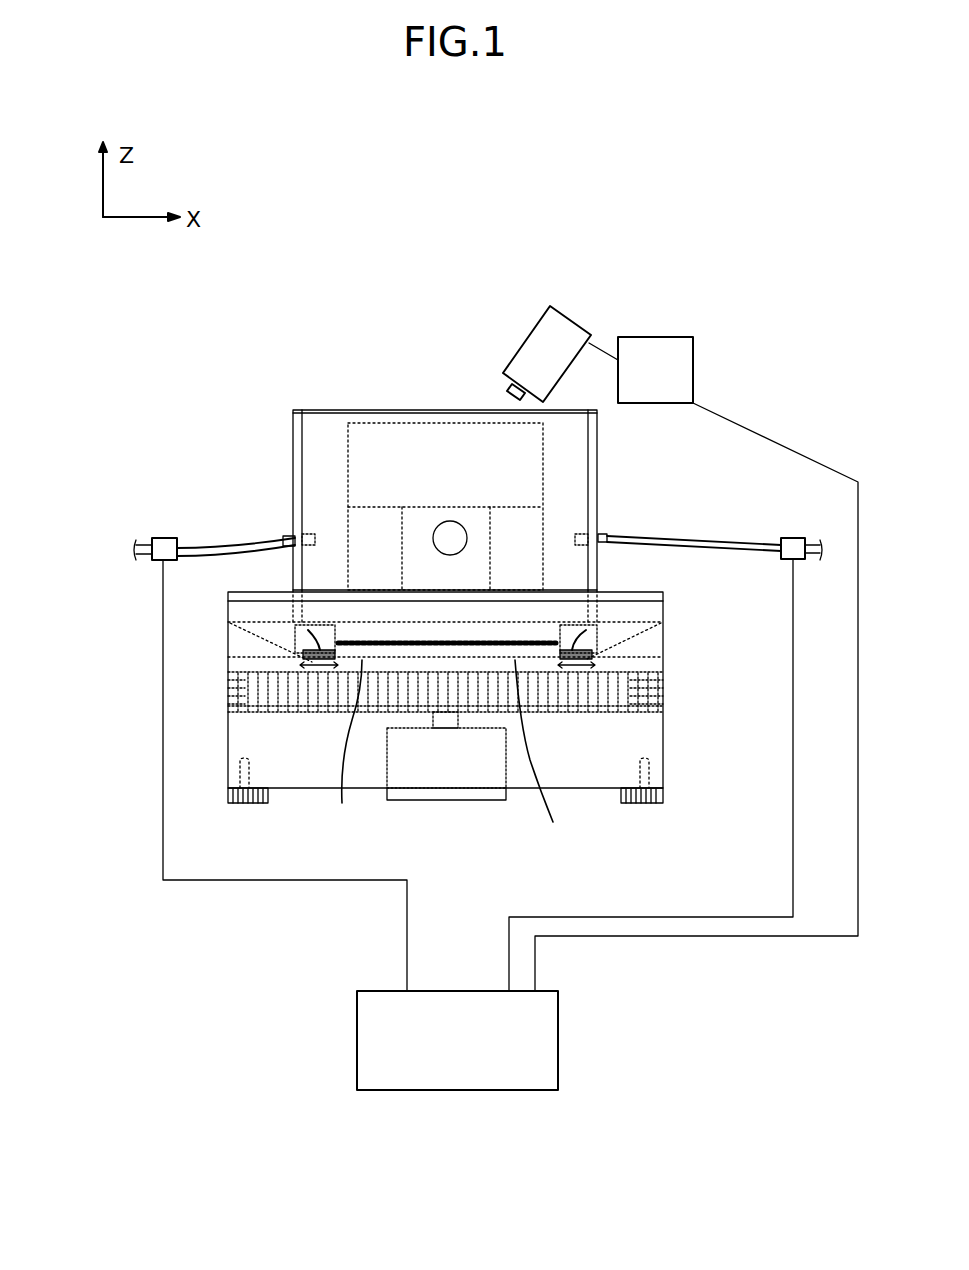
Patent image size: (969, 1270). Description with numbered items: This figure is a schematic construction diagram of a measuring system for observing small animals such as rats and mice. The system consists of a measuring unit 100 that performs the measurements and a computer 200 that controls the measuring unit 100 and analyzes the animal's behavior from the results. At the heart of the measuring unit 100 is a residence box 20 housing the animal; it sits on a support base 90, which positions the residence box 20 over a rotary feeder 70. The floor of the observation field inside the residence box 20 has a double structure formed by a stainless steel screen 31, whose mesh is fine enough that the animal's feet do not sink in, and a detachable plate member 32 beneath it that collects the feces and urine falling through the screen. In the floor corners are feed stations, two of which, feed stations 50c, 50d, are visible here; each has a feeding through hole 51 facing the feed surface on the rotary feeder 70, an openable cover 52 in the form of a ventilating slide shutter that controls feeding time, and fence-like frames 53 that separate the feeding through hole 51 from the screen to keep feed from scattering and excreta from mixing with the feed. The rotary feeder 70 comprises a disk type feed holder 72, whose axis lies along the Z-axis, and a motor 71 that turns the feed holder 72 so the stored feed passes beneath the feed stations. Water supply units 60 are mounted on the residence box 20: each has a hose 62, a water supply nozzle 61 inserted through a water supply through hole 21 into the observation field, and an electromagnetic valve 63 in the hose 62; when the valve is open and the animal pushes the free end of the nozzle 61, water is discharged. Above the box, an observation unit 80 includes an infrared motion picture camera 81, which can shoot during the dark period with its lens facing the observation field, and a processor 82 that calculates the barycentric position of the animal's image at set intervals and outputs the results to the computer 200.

The measuring unit 100 is at (114, 299).
The residence box 20 is at (378, 410).
The water supply through hole 21 is at (450, 521).
The stainless steel screen 31 is at (344, 745).
The detachable plate member 32 is at (663, 684).
The feed station 50c is at (572, 640).
The feed station 50d is at (320, 640).
The feeding through hole 51 is at (306, 630).
The openable cover 52 is at (300, 655).
The fence-like frame 53 is at (338, 635).
The water supply unit 60 is at (275, 492).
The water supply nozzle 61 is at (280, 538).
The hose 62 is at (208, 548).
The electromagnetic valve 63 is at (163, 538).
The rotary feeder 70 is at (572, 850).
The motor 71 is at (443, 800).
The disk type feed holder 72 is at (541, 755).
The observation unit 80 is at (675, 276).
The infrared motion picture camera 81 is at (568, 322).
The processor 82 is at (652, 340).
The support base 90 is at (663, 748).
The computer 200 is at (560, 1047).